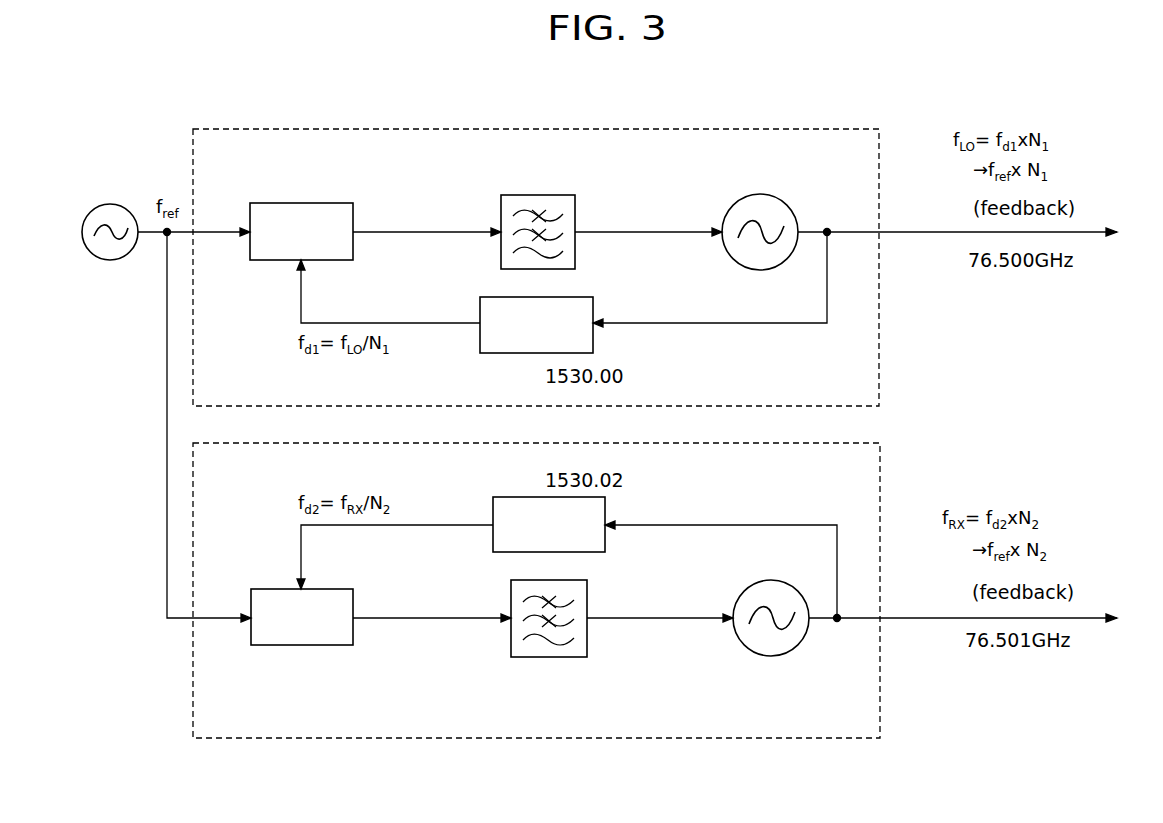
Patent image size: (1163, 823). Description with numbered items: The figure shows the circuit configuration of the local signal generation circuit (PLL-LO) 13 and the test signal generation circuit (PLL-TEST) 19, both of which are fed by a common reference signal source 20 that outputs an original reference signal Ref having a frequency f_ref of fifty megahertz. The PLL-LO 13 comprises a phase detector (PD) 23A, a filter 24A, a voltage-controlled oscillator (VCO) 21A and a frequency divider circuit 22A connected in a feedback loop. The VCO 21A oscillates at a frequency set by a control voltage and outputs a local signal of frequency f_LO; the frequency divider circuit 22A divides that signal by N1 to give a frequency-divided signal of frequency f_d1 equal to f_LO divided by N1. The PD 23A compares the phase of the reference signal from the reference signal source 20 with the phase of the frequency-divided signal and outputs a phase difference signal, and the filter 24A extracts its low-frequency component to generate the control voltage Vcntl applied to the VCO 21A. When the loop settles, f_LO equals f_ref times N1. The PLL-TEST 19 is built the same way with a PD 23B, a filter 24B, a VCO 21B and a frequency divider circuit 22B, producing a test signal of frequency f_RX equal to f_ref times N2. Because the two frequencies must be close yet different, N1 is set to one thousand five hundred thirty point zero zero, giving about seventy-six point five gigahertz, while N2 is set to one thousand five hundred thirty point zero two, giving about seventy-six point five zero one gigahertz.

The local signal generation circuit (PLL-LO) 13 is at (280, 128).
The test signal generation circuit (PLL-TEST) 19 is at (256, 740).
The reference signal source 20 is at (104, 204).
The voltage-controlled oscillator (VCO) 21A is at (788, 206).
The VCO 21B is at (778, 656).
The frequency divider circuit 22A is at (578, 297).
The frequency divider circuit 22B is at (500, 556).
The phase detector (PD) 23A is at (306, 202).
The PD 23B is at (334, 646).
The filter 24A is at (562, 195).
The filter 24B is at (565, 658).